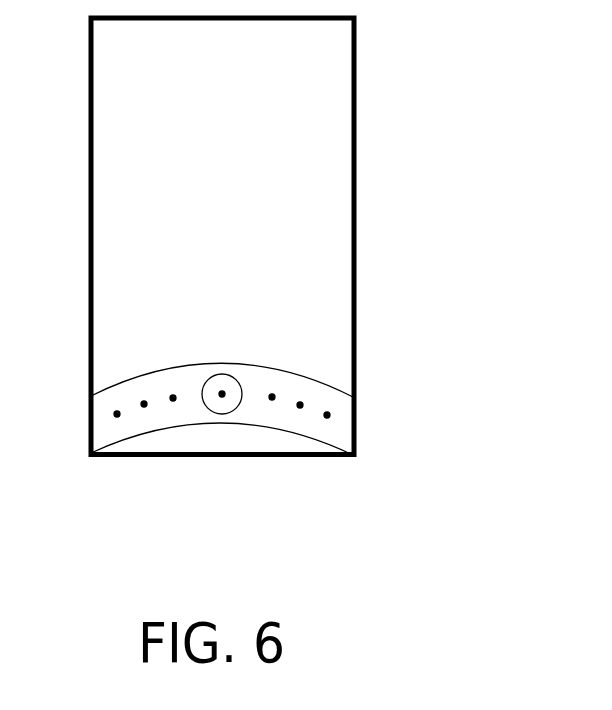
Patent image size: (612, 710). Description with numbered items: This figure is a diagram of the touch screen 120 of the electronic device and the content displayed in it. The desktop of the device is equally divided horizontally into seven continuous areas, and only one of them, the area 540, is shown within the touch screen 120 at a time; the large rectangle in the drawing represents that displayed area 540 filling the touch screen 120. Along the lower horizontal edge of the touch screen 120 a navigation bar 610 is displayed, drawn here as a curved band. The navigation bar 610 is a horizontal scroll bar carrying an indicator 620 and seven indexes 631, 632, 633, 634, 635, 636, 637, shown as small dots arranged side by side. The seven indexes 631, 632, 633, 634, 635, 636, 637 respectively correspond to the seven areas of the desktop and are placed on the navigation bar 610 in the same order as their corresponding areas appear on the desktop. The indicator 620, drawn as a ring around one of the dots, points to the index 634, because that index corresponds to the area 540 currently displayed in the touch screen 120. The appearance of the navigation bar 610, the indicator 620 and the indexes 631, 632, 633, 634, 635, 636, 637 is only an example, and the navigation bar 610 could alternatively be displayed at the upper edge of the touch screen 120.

The touch screen 120 is at (356, 265).
The area 540 is at (328, 113).
The navigation bar 610 is at (308, 373).
The indicator 620 is at (223, 374).
The index 631 is at (117, 414).
The index 632 is at (144, 404).
The index 633 is at (173, 398).
The index 634 is at (222, 394).
The index 635 is at (272, 397).
The index 636 is at (300, 405).
The index 637 is at (327, 415).